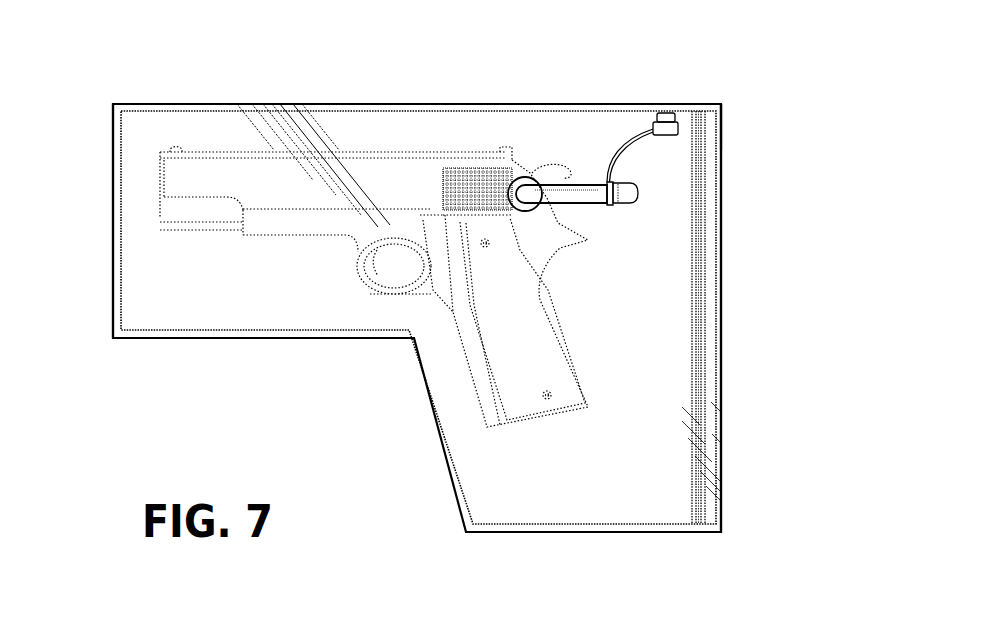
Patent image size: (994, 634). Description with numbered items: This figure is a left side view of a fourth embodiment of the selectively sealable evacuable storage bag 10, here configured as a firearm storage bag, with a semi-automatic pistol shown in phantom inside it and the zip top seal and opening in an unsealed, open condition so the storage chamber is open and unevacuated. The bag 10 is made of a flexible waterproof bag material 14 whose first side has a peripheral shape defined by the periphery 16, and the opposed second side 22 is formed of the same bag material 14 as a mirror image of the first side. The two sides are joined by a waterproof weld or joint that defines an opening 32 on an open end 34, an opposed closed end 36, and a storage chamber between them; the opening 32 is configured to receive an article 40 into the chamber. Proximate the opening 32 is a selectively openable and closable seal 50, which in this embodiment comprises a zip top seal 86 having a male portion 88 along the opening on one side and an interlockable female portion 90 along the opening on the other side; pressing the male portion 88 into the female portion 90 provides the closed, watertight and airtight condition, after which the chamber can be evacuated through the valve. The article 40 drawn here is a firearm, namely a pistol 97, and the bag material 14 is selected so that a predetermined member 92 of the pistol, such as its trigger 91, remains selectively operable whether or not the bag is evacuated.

The selectively sealable evacuable storage bag 10 is at (527, 63).
The flexible waterproof bag material 14 is at (402, 120).
The periphery 16 is at (313, 104).
The second side 22 is at (573, 145).
The opening 32 is at (721, 145).
The open end 34 is at (721, 104).
The closed end 36 is at (113, 250).
The article 40 is at (295, 245).
The selectively openable and closable seal 50 is at (708, 297).
The zip top seal 86 is at (708, 297).
The male portion 88 is at (703, 201).
The female portion 90 is at (705, 243).
The trigger 91 is at (407, 268).
The predetermined member 92 is at (403, 270).
The pistol 97 is at (295, 245).